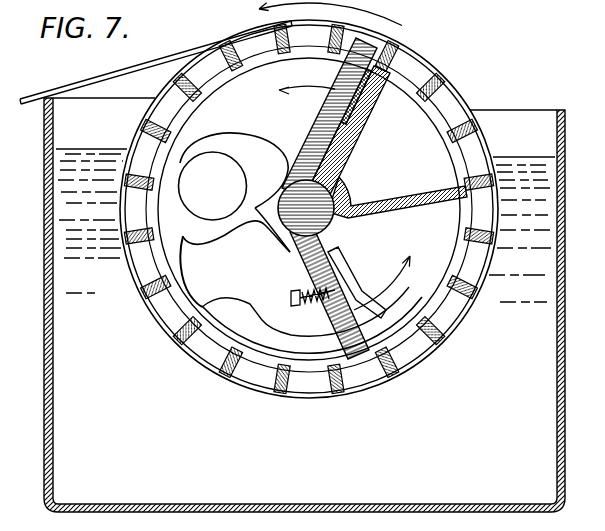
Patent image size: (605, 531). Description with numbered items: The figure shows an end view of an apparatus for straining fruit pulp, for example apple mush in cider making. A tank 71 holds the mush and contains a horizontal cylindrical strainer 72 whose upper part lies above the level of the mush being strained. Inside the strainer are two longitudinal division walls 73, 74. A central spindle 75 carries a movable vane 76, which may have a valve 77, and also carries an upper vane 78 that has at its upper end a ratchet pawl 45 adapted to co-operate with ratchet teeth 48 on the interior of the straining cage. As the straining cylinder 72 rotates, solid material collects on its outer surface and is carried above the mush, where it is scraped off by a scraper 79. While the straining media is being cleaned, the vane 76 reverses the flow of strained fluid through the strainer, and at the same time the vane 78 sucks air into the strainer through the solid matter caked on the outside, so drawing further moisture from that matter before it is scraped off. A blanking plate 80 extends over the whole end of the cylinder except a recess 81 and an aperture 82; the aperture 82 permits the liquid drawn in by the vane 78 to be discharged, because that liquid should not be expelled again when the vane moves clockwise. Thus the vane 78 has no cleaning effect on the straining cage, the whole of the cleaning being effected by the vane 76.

The ratchet pawl 45 is at (352, 73).
The ratchet teeth 48 is at (247, 70).
The tank 71 is at (45, 320).
The horizontal cylindrical strainer 72 is at (203, 373).
The longitudinal division wall 73 is at (400, 207).
The longitudinal division wall 74 is at (340, 139).
The spindle 75 is at (314, 218).
The movable vane 76 is at (361, 334).
The valve 77 is at (353, 282).
The upper vane 78 is at (330, 131).
The scraper 79 is at (182, 57).
The blanking plate 80 is at (210, 228).
The recess 81 is at (301, 294).
The aperture 82 is at (213, 186).